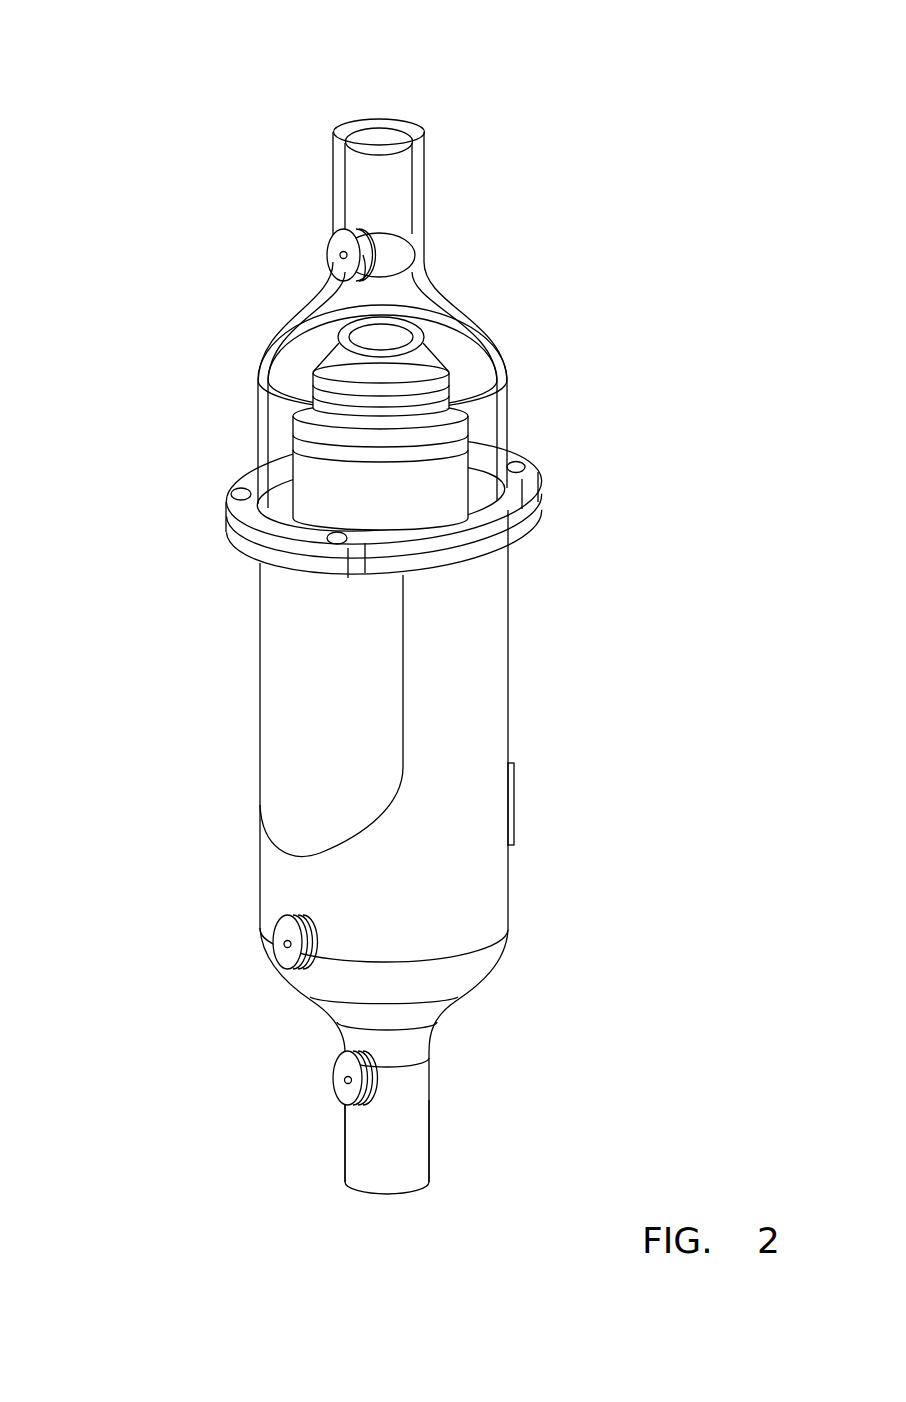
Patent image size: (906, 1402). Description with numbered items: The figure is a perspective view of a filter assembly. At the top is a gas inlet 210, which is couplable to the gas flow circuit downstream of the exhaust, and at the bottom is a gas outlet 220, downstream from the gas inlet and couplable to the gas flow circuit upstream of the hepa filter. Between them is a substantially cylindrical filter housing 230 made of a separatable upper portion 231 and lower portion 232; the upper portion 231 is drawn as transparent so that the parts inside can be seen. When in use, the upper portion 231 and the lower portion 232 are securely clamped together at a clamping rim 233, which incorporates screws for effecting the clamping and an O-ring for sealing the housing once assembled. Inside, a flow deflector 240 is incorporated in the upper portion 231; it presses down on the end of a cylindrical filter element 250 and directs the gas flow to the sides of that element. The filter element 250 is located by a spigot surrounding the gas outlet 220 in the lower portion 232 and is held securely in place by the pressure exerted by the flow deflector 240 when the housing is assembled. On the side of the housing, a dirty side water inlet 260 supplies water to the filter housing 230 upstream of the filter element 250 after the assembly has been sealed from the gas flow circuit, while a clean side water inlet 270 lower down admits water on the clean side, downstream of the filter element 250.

The gas inlet 210 is at (378, 133).
The gas outlet 220 is at (388, 1203).
The filter housing 230 is at (518, 675).
The upper portion 231 is at (403, 293).
The lower portion 232 is at (468, 810).
The clamping rim 233 is at (285, 527).
The flow deflector 240 is at (427, 358).
The cylindrical filter element 250 is at (435, 485).
The dirty side water inlet 260 is at (284, 945).
The clean side water inlet 270 is at (344, 1080).